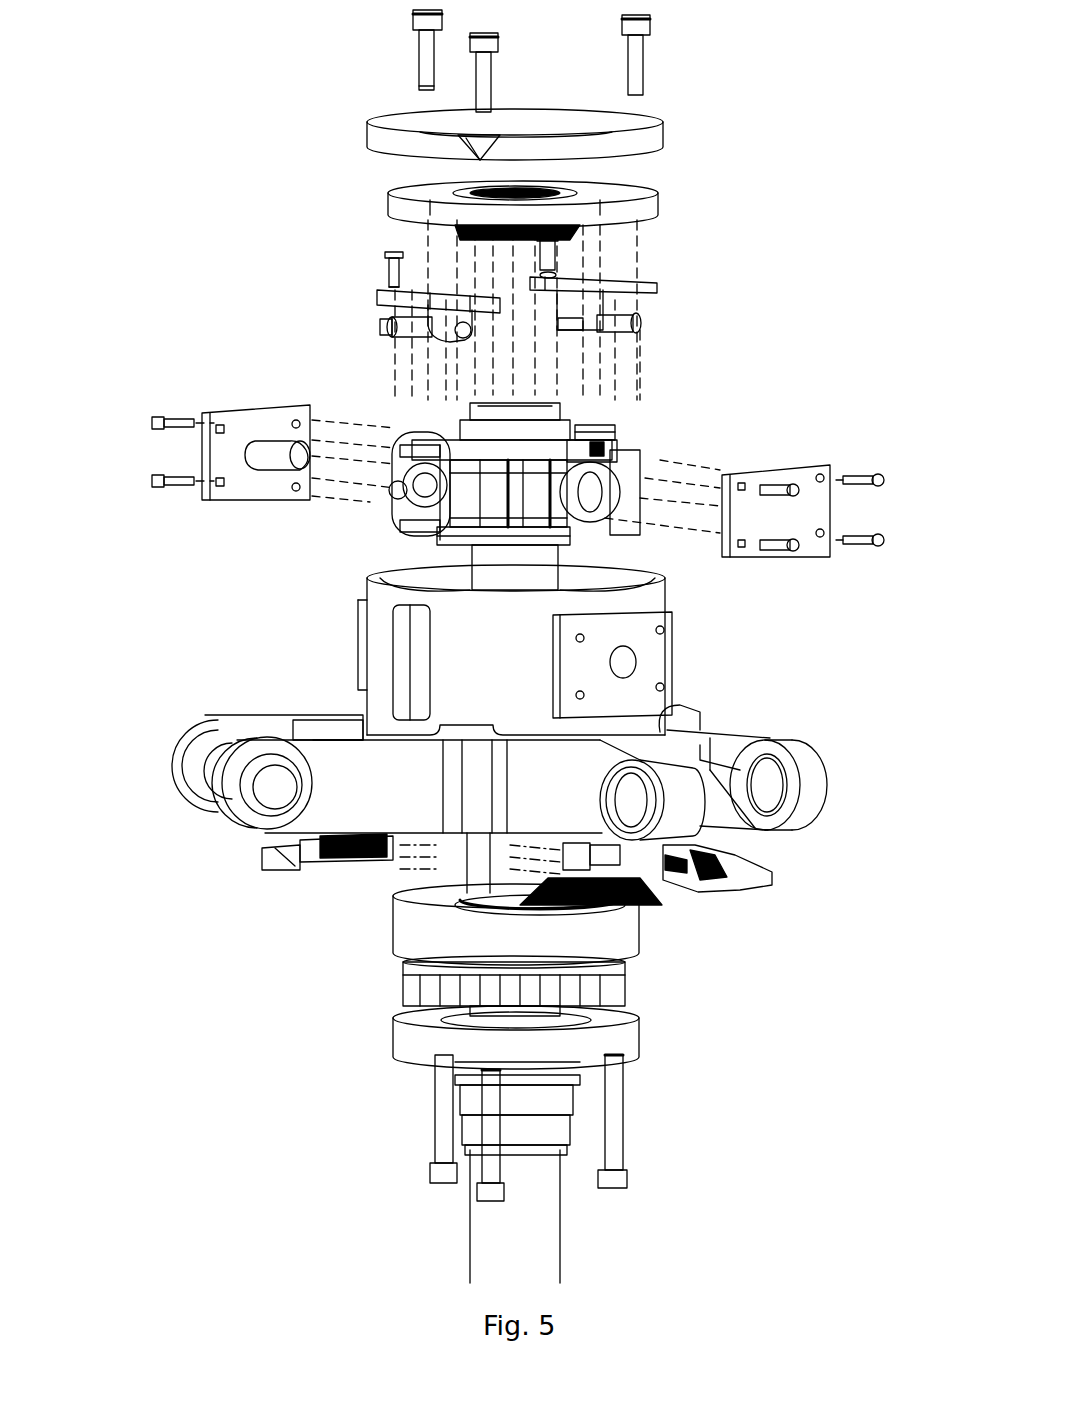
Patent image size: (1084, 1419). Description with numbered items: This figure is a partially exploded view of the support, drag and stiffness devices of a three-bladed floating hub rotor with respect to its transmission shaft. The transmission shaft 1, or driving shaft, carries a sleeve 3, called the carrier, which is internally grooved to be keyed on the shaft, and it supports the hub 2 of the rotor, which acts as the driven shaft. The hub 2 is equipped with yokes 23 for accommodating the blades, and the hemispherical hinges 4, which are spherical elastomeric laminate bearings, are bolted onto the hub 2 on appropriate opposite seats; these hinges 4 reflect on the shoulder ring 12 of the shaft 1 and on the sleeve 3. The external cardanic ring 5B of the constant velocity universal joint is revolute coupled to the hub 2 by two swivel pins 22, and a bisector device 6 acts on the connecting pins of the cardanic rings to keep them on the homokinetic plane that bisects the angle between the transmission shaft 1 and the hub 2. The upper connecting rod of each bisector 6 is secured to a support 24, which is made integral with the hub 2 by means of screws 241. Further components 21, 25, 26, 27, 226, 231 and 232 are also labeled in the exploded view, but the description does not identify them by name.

The transmission shaft 1 is at (562, 1265).
The hub of the rotor 2 is at (492, 640).
The sleeve 3 is at (558, 437).
The hemispherical hinges 4 is at (660, 198).
The external cardanic ring 5B is at (638, 448).
The bisector device 6 is at (393, 458).
The shoulder ring 12 is at (467, 543).
The cap 21 is at (380, 122).
The swivel pins 22 is at (272, 482).
The yokes 23 is at (245, 733).
The support 24 is at (372, 300).
The lower disc 25 is at (390, 1025).
The gear 26 is at (632, 990).
The upper disc 27 is at (390, 920).
The body top portion 226 is at (465, 665).
The arm link 231 is at (712, 785).
The arm eye 232 is at (250, 825).
The screws 241 is at (380, 248).